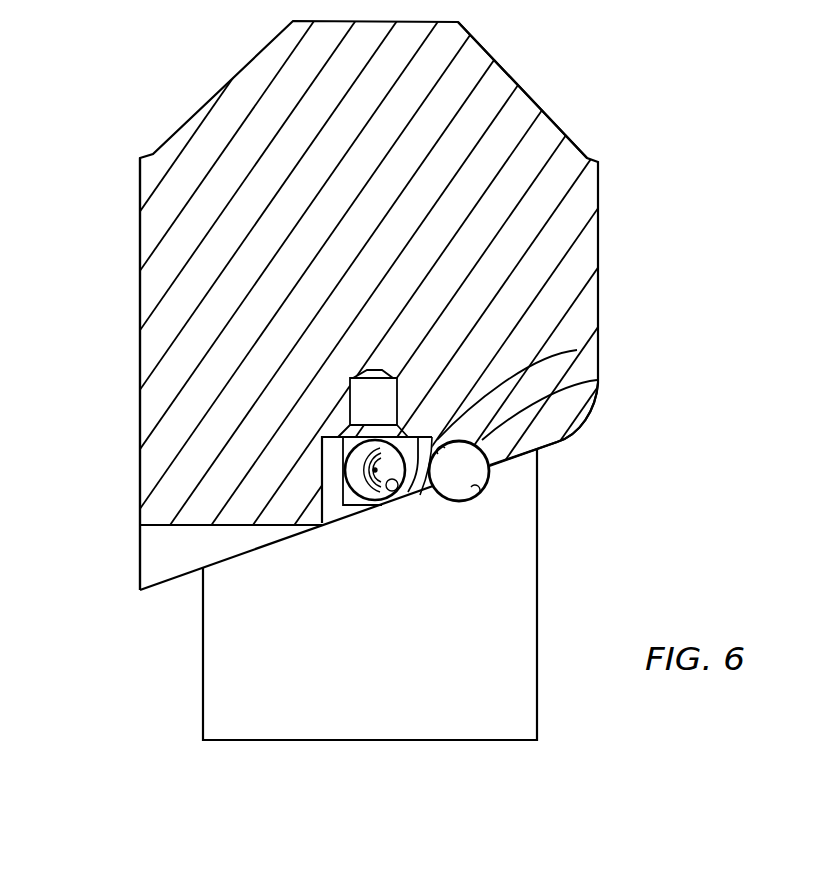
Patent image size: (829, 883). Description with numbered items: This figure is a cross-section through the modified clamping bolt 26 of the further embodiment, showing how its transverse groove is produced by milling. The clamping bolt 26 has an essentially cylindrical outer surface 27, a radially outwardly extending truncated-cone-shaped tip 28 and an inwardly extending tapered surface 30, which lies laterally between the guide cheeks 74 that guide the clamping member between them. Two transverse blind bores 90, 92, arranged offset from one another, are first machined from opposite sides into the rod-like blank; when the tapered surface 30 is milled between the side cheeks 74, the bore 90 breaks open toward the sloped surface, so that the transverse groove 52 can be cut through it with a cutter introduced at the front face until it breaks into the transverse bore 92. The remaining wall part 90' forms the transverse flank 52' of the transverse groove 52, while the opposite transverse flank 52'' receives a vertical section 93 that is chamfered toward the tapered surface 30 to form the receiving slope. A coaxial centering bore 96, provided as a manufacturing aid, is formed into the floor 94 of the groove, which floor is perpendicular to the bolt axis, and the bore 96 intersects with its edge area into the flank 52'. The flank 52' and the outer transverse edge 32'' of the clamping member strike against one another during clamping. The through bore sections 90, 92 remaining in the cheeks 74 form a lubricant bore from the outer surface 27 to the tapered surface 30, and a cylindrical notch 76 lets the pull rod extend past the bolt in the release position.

The clamping bolt 26 is at (607, 272).
The cylindrical outer surface 27 is at (138, 215).
The truncated-cone-shaped tip 28 is at (505, 70).
The tapered surface 30 is at (563, 448).
The outer transverse edge 32'' is at (623, 412).
The transverse groove 52 is at (555, 386).
The transverse flank 52' is at (344, 582).
The transverse flank 52'' is at (564, 504).
The guide cheek 74 is at (243, 667).
The cylindrical notch 76 is at (180, 545).
The transverse blind bore 90 is at (516, 524).
The remaining wall part 90' is at (617, 394).
The transverse blind bore 92 is at (407, 490).
The vertical section 93 is at (340, 517).
The floor 94 is at (423, 497).
The coaxial centering bore 96 is at (373, 407).